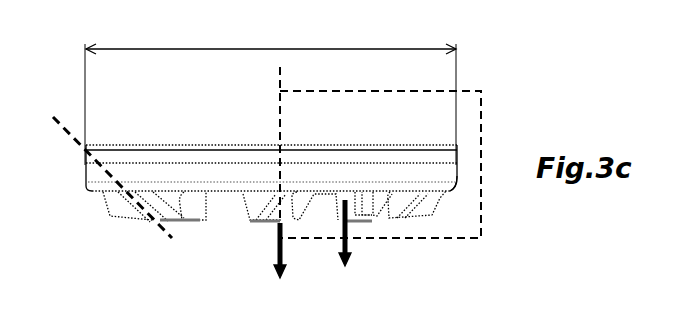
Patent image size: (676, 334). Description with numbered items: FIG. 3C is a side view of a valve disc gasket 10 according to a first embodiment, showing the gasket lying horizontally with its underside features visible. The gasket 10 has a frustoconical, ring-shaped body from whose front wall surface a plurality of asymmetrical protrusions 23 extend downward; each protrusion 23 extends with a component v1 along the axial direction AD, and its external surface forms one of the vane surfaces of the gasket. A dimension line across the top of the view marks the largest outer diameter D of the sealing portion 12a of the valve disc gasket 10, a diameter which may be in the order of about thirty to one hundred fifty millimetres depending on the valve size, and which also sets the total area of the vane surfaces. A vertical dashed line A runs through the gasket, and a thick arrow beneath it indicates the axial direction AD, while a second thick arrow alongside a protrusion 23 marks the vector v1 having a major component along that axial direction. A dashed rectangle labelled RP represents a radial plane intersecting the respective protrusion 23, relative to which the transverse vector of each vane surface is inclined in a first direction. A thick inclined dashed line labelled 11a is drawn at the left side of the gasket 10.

The valve disc gasket 10 is at (233, 135).
The section plane line 11a is at (107, 164).
The sealing portion 12a is at (459, 176).
The asymmetrical protrusion 23 is at (241, 202).
The largest outer diameter D is at (270, 92).
The axis A is at (268, 141).
The axial direction AD is at (278, 267).
The vector v1 is at (349, 246).
The radial plane RP is at (395, 152).